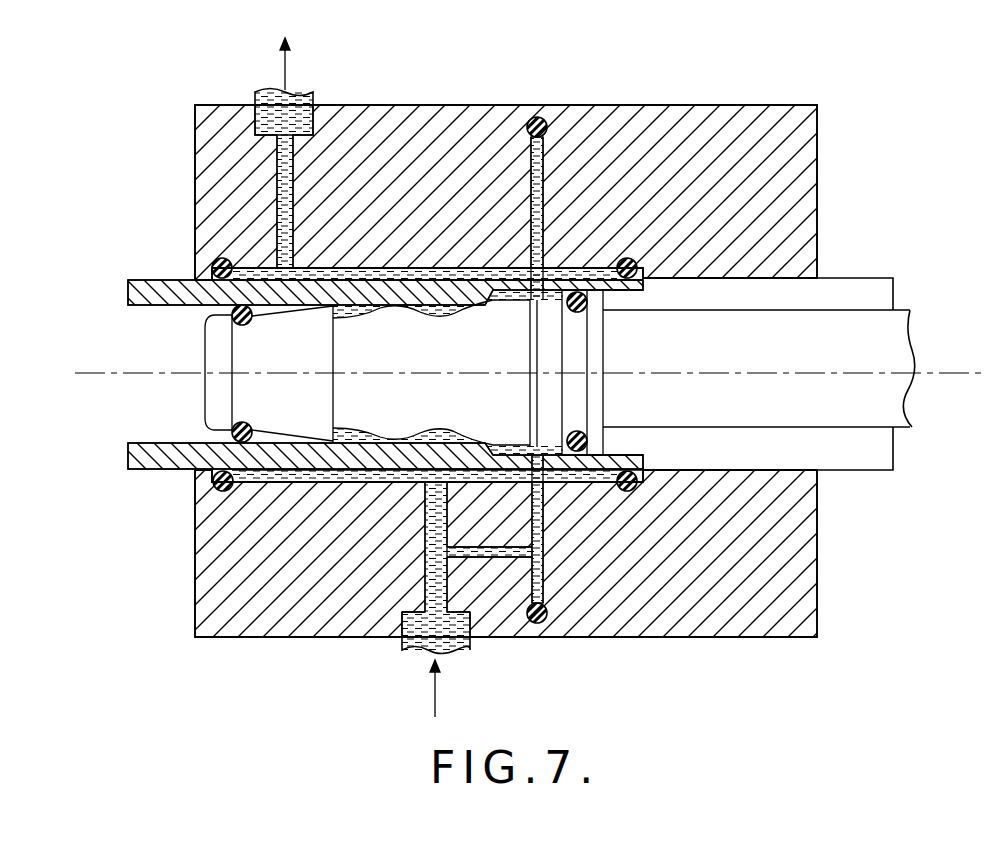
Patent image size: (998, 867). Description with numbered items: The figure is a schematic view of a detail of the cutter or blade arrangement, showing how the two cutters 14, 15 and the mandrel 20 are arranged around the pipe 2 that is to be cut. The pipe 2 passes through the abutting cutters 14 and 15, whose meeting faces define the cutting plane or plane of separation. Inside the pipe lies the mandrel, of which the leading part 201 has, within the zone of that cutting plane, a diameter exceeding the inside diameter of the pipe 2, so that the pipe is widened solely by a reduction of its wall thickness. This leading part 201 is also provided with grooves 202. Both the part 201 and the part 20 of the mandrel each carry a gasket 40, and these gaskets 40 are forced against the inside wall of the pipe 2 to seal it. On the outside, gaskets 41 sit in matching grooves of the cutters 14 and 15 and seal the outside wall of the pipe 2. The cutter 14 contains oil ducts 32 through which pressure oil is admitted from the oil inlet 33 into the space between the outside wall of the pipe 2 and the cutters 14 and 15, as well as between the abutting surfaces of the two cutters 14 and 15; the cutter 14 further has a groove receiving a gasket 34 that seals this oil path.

The pipe 2 is at (140, 466).
The cutter 14 is at (195, 146).
The cutter 15 is at (817, 170).
The mandrel 20 is at (553, 440).
The oil ducts 32 is at (283, 147).
The oil inlet 33 is at (453, 637).
The gasket 34 is at (541, 119).
The gasket 40 is at (232, 313).
The gaskets 41 is at (212, 266).
The part of the mandrel 201 is at (392, 335).
The grooves 202 is at (453, 314).